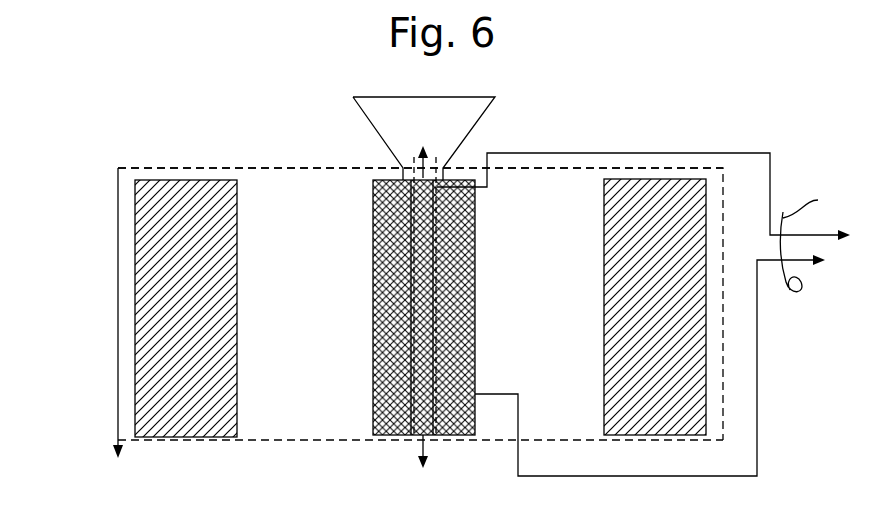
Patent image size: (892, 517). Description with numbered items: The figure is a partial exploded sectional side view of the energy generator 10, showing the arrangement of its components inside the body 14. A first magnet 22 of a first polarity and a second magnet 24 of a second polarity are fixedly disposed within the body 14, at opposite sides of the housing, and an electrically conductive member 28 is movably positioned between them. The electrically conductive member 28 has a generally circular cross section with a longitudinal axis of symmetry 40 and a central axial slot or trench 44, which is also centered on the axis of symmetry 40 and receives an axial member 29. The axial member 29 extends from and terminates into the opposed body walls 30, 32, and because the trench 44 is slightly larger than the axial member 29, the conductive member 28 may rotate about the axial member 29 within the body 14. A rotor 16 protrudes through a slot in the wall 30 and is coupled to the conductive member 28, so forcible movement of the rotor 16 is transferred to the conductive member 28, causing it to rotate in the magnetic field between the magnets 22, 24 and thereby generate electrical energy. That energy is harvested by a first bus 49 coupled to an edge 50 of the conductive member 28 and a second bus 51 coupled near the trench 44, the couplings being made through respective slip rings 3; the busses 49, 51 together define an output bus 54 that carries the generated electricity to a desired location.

The energy generator 10 is at (97, 164).
The body 14 is at (118, 268).
The rotor 16 is at (464, 113).
The first magnet 22 is at (155, 352).
The second magnet 24 is at (688, 370).
The electrically conductive member 28 is at (475, 262).
The axial member 29 is at (410, 407).
The body wall 30 is at (322, 168).
The body wall 32 is at (300, 440).
The longitudinal axis of symmetry 40 is at (426, 449).
The axial slot or trench 44 is at (413, 273).
The first bus 49 is at (638, 476).
The edge 50 is at (475, 328).
The second bus 51 is at (487, 195).
The output bus 54 is at (815, 240).
The slip rings 3 is at (448, 193).